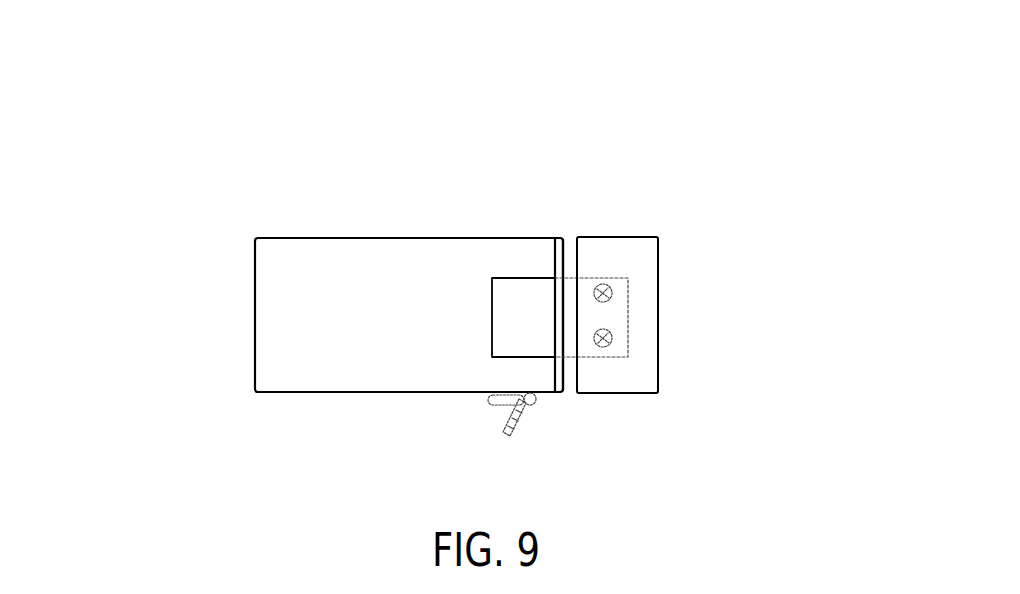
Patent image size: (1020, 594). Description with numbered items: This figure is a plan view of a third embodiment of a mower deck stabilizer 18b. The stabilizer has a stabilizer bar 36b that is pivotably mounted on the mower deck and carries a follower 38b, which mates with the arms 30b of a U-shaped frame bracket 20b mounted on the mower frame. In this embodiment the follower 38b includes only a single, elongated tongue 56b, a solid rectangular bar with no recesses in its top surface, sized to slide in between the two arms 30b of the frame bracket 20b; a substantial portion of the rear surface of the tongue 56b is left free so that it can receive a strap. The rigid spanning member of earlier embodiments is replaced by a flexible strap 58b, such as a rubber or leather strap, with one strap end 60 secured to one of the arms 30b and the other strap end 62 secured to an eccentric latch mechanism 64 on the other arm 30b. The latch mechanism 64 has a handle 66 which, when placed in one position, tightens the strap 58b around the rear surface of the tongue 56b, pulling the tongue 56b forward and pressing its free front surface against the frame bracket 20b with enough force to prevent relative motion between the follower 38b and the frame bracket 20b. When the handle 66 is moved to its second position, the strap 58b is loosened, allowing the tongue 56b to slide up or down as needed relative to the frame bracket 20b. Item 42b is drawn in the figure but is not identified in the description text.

The mower deck stabilizer 18b is at (695, 182).
The frame bracket 20b is at (253, 294).
The arms 30b is at (527, 258).
The stabilizer bar 36b is at (658, 260).
The follower 38b is at (625, 333).
The fastener 42b is at (610, 288).
The tongue 56b is at (522, 313).
The strap 58b is at (535, 232).
The strap end 60 is at (500, 231).
The strap end 62 is at (540, 397).
The eccentric latch mechanism 64 is at (533, 408).
The handle 66 is at (505, 407).